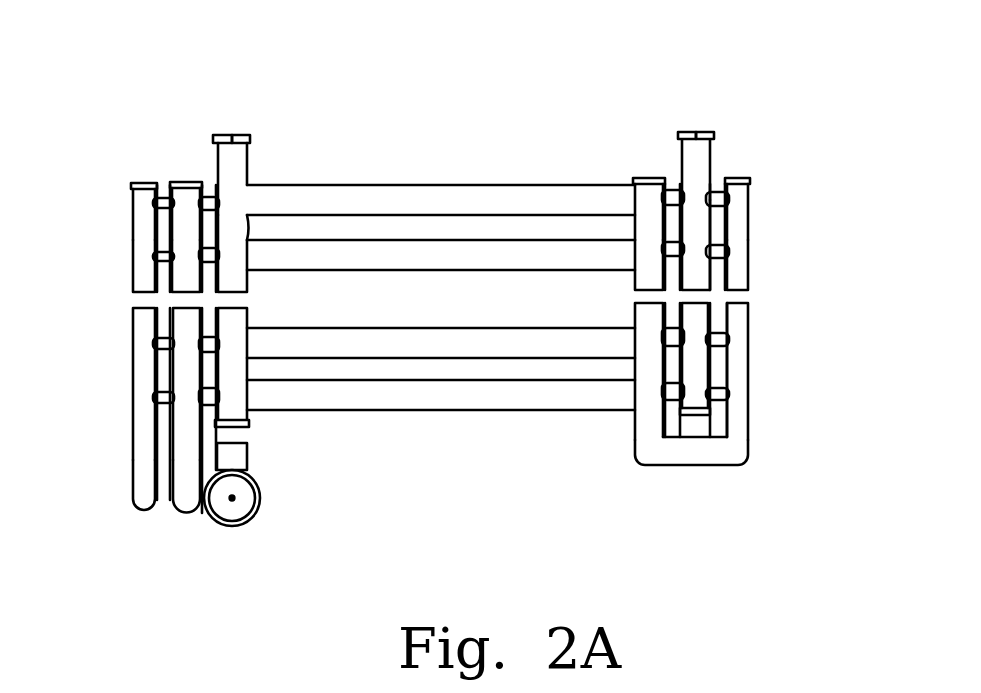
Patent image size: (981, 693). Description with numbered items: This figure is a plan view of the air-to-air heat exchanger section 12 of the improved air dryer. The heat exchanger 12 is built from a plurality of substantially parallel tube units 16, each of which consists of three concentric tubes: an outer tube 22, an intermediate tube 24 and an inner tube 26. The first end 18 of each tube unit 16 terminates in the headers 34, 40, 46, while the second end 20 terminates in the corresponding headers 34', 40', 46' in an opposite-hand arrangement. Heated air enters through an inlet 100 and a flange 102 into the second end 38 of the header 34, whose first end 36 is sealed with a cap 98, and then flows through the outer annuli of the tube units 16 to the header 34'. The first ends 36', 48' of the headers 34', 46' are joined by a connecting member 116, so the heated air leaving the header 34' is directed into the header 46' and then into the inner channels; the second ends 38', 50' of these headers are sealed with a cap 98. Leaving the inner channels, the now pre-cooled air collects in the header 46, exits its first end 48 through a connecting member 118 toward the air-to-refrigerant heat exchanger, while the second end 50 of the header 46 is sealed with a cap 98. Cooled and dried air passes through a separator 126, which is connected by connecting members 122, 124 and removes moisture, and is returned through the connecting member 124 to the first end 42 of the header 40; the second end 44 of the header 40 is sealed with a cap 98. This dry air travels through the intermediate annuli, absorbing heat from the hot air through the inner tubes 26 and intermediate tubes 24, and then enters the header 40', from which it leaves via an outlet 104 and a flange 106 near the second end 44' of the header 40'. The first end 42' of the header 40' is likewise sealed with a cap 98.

The air-to-air heat exchanger section 12 is at (384, 25).
The tube units 16 is at (417, 185).
The first end of tube units 18 is at (275, 327).
The second end of tube units 20 is at (600, 327).
The outer tube 22 is at (460, 270).
The intermediate tube 24 is at (205, 193).
The inner tube 26 is at (162, 187).
The header 34 is at (288, 214).
The header 34' is at (596, 213).
The first end of header 34 36 is at (284, 382).
The first end of header 34' 36' is at (591, 398).
The second end of header 34 38 is at (285, 170).
The second end of header 34' 38' is at (596, 169).
The header 40 is at (138, 151).
The header 40' is at (782, 245).
The first end of header 40 42 is at (162, 476).
The first end of header 40' 42' is at (785, 369).
The second end of header 40 44 is at (162, 165).
The second end of header 40' 44' is at (774, 229).
The header 46 is at (91, 256).
The header 46' is at (804, 265).
The first end of header 46 48 is at (90, 414).
The first end of header 46' 48' is at (807, 371).
The second end of header 46 50 is at (91, 212).
The second end of header 46' 50' is at (804, 204).
The cap 98 is at (193, 182).
The inlet 100 is at (226, 135).
The flange 102 is at (243, 134).
The outlet 104 is at (688, 130).
The flange 106 is at (697, 157).
The connecting member 116 is at (685, 452).
The connecting member 118 is at (137, 502).
The connecting member 122 is at (262, 487).
The connecting member 124 is at (183, 500).
The separator 126 is at (247, 525).